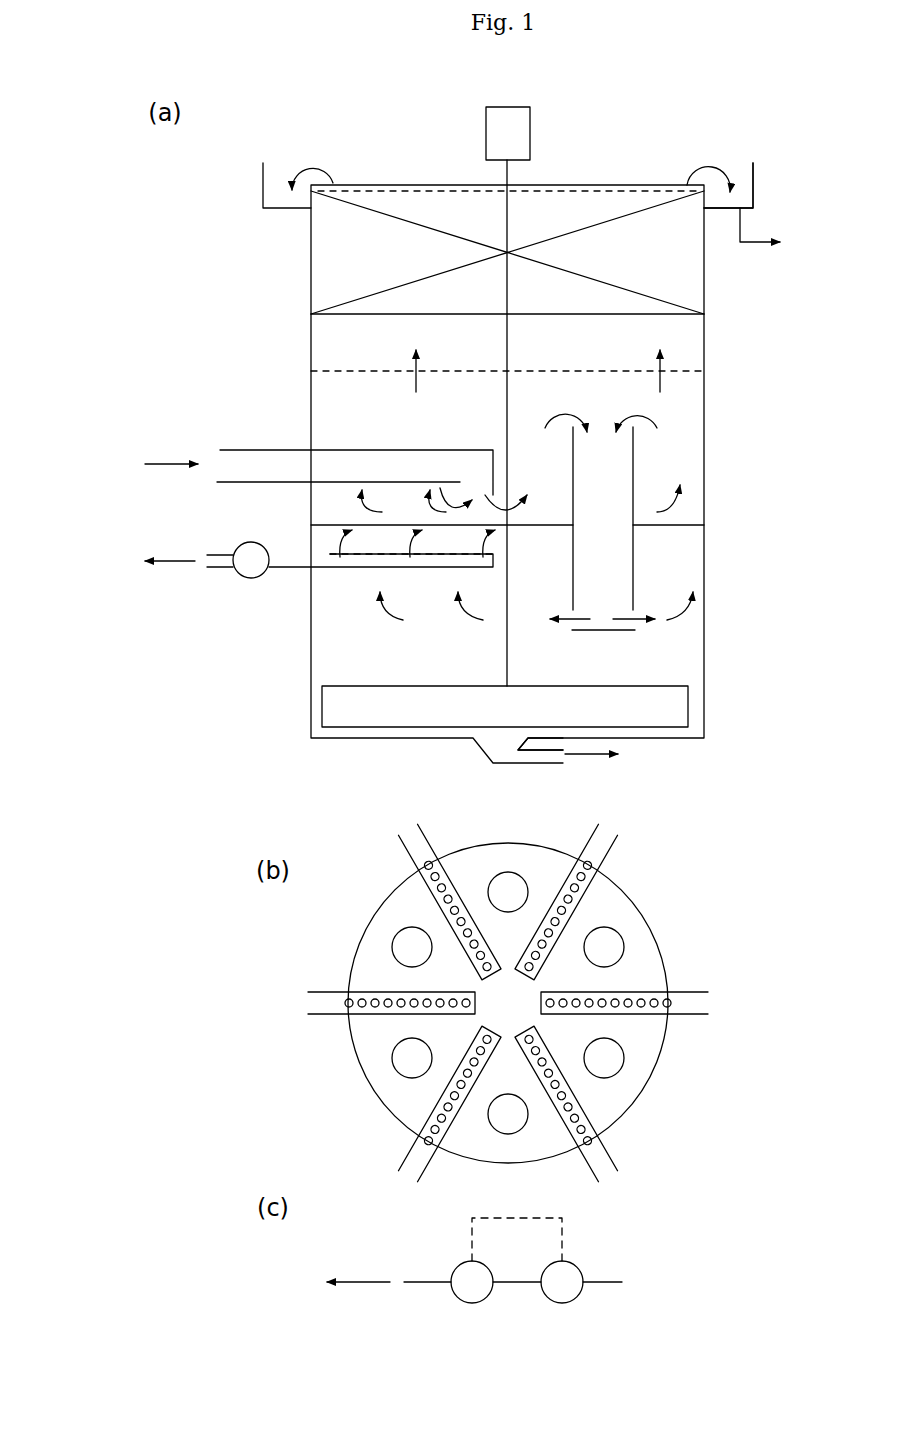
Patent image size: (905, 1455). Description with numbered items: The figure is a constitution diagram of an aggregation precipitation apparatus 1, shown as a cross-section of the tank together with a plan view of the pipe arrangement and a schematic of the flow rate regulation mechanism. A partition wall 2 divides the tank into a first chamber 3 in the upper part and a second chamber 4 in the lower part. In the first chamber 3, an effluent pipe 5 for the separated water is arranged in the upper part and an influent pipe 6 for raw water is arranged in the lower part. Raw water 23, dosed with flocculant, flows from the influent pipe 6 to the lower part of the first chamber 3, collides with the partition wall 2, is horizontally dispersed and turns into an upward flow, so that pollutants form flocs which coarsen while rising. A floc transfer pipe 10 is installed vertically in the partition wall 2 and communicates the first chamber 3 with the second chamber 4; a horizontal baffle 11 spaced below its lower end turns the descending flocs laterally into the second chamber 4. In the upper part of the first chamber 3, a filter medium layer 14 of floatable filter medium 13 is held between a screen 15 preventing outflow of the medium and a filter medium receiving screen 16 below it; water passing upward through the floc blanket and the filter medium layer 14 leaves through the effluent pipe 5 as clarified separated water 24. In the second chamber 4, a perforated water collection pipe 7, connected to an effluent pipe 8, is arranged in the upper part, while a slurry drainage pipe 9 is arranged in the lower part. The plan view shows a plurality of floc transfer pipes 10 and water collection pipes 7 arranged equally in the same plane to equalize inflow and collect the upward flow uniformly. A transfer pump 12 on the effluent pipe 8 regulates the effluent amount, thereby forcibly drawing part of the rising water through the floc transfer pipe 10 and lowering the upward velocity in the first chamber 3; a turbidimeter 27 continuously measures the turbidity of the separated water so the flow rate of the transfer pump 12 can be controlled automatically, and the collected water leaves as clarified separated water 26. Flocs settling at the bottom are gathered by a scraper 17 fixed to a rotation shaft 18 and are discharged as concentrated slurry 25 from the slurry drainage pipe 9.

The aggregation precipitation apparatus 1 is at (625, 127).
The partition wall 2 is at (680, 523).
The first chamber 3 is at (122, 220).
The second chamber 4 is at (122, 535).
The effluent pipe for the separated water in the first chamber 5 is at (768, 245).
The influent pipe for raw water 6 is at (265, 448).
The water collection pipe for the separated water in the second chamber 7 is at (350, 568).
The effluent pipe for the separated water in the second chamber 8 is at (297, 570).
The slurry drainage pipe 9 is at (545, 765).
The floc transfer pipe 10 is at (633, 447).
The baffle 11 is at (610, 632).
The transfer pump for the separated water in the second chamber 12 is at (243, 577).
The filter medium 13 is at (660, 262).
The filter medium layer 14 is at (670, 316).
The screen for preventing the outflow of the filter medium 15 is at (653, 188).
The filter medium receiving screen 16 is at (355, 371).
The scraper 17 is at (665, 727).
The rotation shaft of the scraper 18 is at (507, 642).
The raw water 23 is at (171, 444).
The clarified separated water in the first chamber 24 is at (786, 232).
The concentrated slurry 25 is at (595, 773).
The clarified separated water in the second chamber 26 is at (267, 902).
The turbidimeter 27 is at (483, 1284).